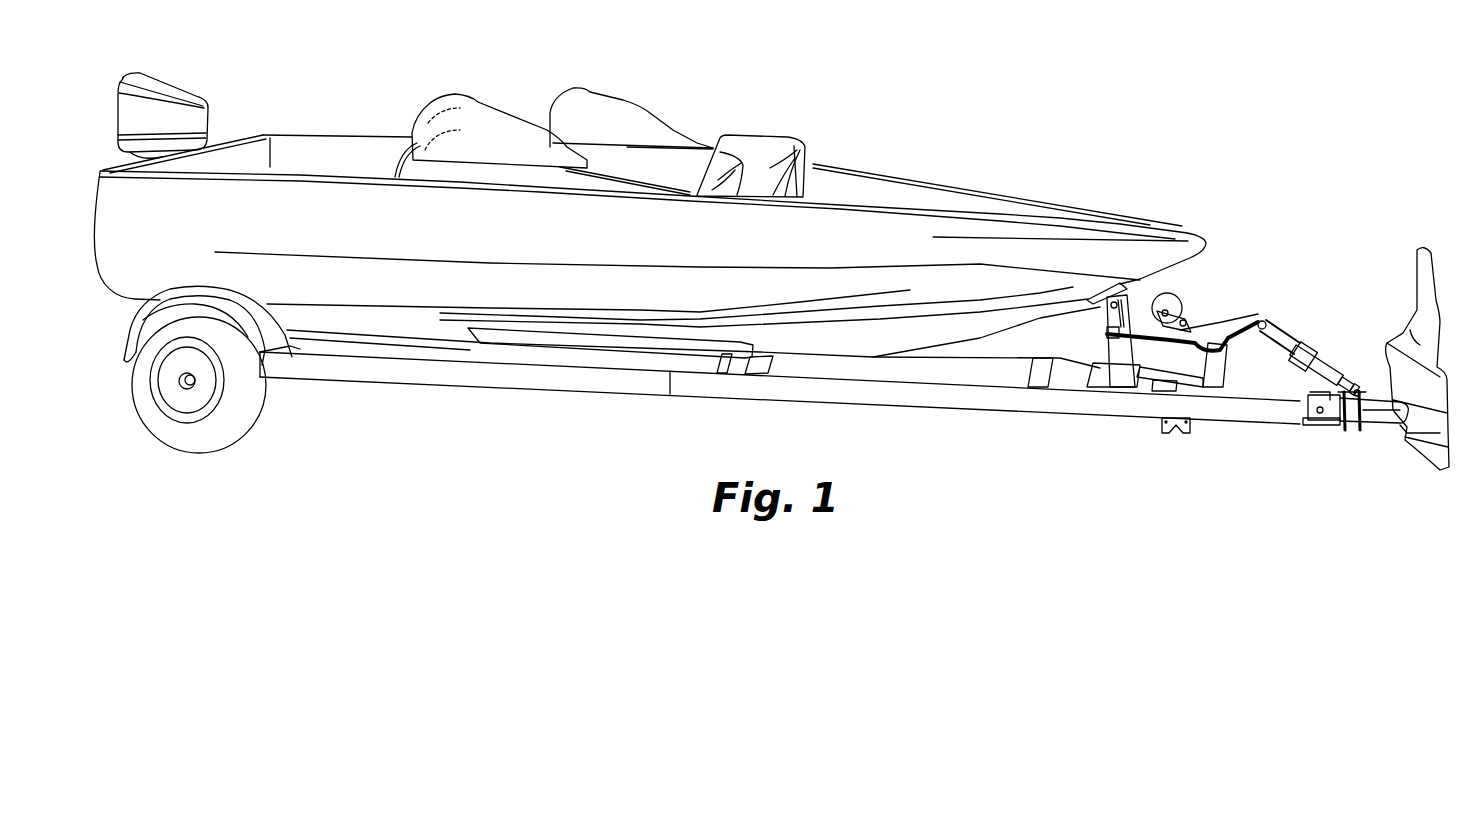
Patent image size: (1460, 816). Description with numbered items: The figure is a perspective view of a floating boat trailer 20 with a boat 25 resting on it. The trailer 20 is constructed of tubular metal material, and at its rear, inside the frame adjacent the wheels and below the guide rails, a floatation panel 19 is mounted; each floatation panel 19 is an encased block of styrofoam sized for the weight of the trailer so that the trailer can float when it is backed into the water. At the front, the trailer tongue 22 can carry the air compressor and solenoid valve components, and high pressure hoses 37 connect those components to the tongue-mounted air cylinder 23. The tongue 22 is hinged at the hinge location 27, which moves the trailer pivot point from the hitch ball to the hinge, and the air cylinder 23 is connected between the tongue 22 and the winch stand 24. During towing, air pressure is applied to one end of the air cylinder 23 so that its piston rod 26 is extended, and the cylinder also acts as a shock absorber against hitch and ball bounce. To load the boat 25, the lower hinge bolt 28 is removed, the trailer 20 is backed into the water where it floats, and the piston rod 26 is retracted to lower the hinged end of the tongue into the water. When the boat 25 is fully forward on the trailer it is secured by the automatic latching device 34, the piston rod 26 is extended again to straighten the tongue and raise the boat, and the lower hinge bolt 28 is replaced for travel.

The floatation panel 19 is at (306, 320).
The floating boat trailer 20 is at (1320, 290).
The trailer tongue 22 is at (1147, 412).
The air cylinder 23 is at (1332, 357).
The winch stand 24 is at (1232, 303).
The boat 25 is at (1170, 247).
The piston rod 26 is at (1283, 325).
The hinge location 27 is at (1298, 430).
The lower hinge bolt 28 is at (1328, 426).
The automatic latching device 34 is at (1097, 302).
The high pressure hoses 37 is at (1275, 328).